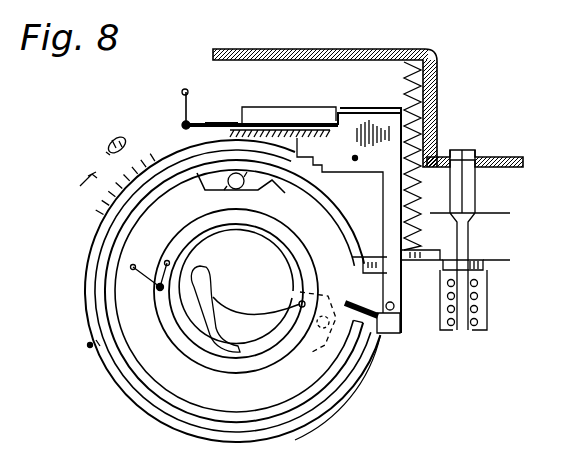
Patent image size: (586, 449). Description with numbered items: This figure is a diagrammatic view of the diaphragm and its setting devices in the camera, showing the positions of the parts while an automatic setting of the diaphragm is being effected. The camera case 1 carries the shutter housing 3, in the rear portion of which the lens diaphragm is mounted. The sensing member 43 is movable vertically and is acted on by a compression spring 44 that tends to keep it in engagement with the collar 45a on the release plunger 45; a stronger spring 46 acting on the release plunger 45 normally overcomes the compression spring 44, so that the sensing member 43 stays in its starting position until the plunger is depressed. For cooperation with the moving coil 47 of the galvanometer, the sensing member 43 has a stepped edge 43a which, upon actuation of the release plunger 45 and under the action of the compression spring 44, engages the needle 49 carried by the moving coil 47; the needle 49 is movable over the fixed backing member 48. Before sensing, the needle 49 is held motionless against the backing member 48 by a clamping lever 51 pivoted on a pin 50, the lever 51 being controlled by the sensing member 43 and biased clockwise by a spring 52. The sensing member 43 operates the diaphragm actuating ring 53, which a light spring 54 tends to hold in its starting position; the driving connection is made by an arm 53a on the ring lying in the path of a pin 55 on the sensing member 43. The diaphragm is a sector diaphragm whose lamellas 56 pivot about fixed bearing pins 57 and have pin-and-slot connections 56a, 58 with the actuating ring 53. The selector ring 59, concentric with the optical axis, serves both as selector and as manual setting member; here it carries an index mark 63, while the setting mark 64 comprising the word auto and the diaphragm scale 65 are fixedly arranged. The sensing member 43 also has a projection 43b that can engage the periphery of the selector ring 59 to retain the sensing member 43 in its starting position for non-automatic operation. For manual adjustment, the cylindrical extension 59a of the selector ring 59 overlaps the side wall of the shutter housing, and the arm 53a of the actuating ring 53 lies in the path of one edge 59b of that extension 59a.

The camera case 1 is at (368, 50).
The shutter housing 3 is at (108, 228).
The sensing member 43 is at (343, 128).
The stepped edge 43a is at (298, 136).
The projection 43b is at (377, 258).
The compression spring 44 is at (422, 101).
The release plunger 45 is at (461, 162).
The collar 45a is at (485, 266).
The spring 46 is at (488, 306).
The moving coil 47 is at (202, 440).
The backing member 48 is at (317, 138).
The needle 49 is at (258, 124).
The pin 50 is at (183, 125).
The clamping lever 51 is at (221, 123).
The spring 52 is at (182, 94).
The diaphragm actuating ring 53 is at (167, 375).
The arm 53a is at (380, 340).
The light spring 54 is at (160, 287).
The pin 55 is at (394, 305).
The diaphragm lamella 56 is at (221, 290).
The pin-and-slot connection 56a is at (331, 345).
The bearing pin 57 is at (299, 303).
The pin-and-slot connection 58 is at (348, 364).
The selector ring 59 is at (97, 247).
The cylindrical extension 59a is at (169, 412).
The edge 59b is at (297, 157).
The index mark 63 is at (109, 371).
The setting mark 64 is at (89, 342).
The diaphragm scale 65 is at (115, 162).